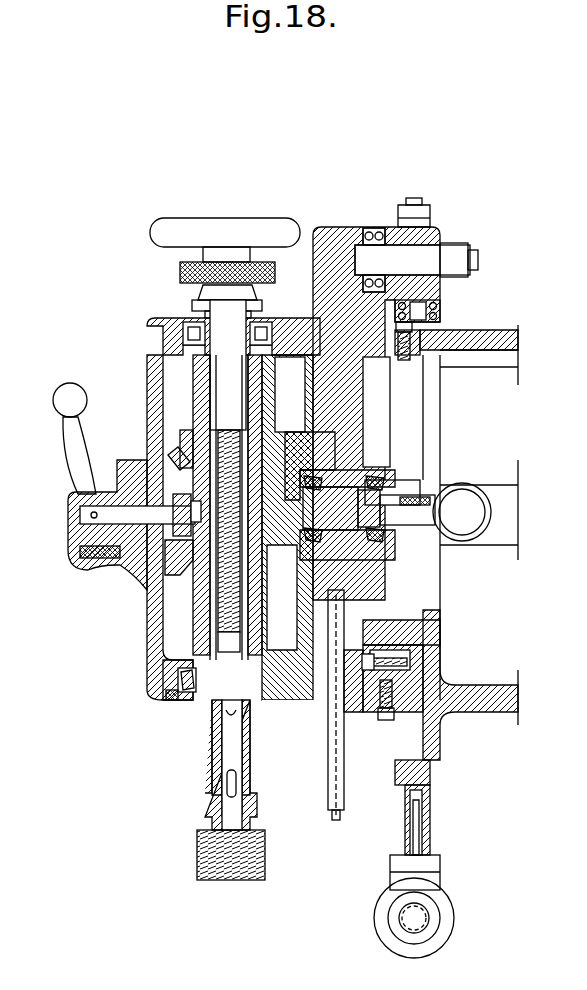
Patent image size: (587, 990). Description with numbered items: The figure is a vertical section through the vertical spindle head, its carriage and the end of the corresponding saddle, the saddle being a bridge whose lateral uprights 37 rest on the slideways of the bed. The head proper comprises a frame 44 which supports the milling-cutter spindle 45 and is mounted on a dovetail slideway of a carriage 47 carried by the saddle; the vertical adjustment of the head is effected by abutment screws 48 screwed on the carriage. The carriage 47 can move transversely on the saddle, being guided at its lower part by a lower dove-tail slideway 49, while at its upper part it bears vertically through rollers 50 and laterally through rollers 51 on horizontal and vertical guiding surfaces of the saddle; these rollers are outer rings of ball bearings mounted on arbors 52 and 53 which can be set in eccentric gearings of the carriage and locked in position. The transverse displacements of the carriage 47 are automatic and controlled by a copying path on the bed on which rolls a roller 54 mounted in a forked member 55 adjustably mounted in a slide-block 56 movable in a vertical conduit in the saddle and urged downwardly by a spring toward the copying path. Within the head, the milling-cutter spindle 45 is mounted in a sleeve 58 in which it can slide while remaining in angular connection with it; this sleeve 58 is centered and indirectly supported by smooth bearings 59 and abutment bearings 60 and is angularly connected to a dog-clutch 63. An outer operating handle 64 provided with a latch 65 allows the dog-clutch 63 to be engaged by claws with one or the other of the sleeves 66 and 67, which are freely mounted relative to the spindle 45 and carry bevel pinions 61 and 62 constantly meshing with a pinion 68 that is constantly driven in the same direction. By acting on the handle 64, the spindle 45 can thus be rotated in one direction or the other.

The lateral upright 37 is at (382, 712).
The frame 44 is at (300, 700).
The milling-cutter spindle 45 is at (210, 700).
The carriage 47 is at (330, 228).
The abutment screw 48 is at (340, 770).
The lower dove-tail slideway 49 is at (395, 615).
The roller 50 is at (375, 228).
The roller 51 is at (440, 312).
The arbor 52 is at (410, 262).
The arbor 53 is at (418, 200).
The roller 54 is at (440, 925).
The forked member 55 is at (425, 865).
The slide-block 56 is at (430, 795).
The sleeve 58 is at (166, 695).
The smooth bearing 59 is at (175, 320).
The abutment bearing 60 is at (180, 678).
The bevel pinion 61 is at (170, 452).
The bevel pinion 62 is at (170, 572).
The dog-clutch 63 is at (132, 565).
The operating handle 64 is at (73, 458).
The latch 65 is at (95, 560).
The sleeve 66 is at (155, 372).
The sleeve 67 is at (195, 625).
The pinion 68 is at (300, 458).